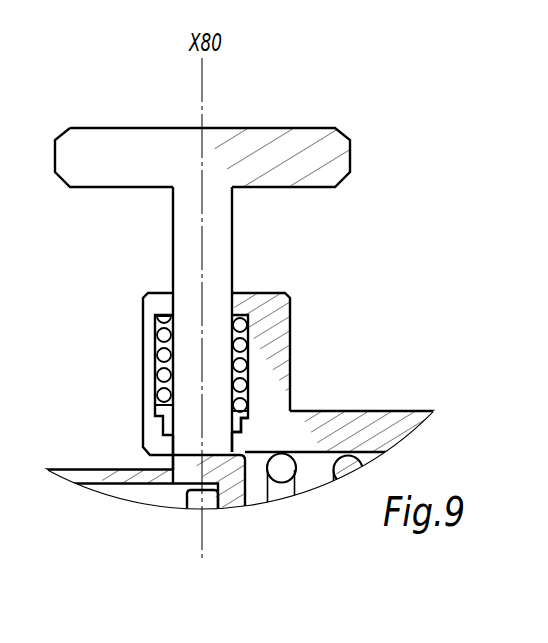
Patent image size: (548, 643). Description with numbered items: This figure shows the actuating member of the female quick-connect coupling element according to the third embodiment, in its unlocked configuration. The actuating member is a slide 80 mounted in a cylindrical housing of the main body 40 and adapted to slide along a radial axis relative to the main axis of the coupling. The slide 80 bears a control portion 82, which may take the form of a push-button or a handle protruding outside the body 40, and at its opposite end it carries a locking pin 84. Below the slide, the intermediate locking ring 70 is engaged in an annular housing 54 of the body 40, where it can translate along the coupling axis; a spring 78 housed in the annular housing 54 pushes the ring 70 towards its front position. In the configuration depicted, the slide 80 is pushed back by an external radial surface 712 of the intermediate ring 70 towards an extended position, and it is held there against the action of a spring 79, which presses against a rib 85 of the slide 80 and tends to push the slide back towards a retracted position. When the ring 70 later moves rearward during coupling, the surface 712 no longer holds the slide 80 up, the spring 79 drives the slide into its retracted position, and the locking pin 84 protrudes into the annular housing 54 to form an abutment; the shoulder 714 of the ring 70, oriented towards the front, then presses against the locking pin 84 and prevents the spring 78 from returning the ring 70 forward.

The main body 40 is at (385, 430).
The annular housing 54 is at (252, 500).
The intermediate locking ring 70 is at (85, 473).
The spring 78 is at (282, 473).
The spring 79 is at (157, 335).
The slide 80 is at (217, 242).
The control portion 82 is at (213, 146).
The locking pin 84 is at (193, 448).
The rib 85 is at (252, 424).
The external radial surface 712 is at (186, 437).
The shoulder 714 is at (163, 459).